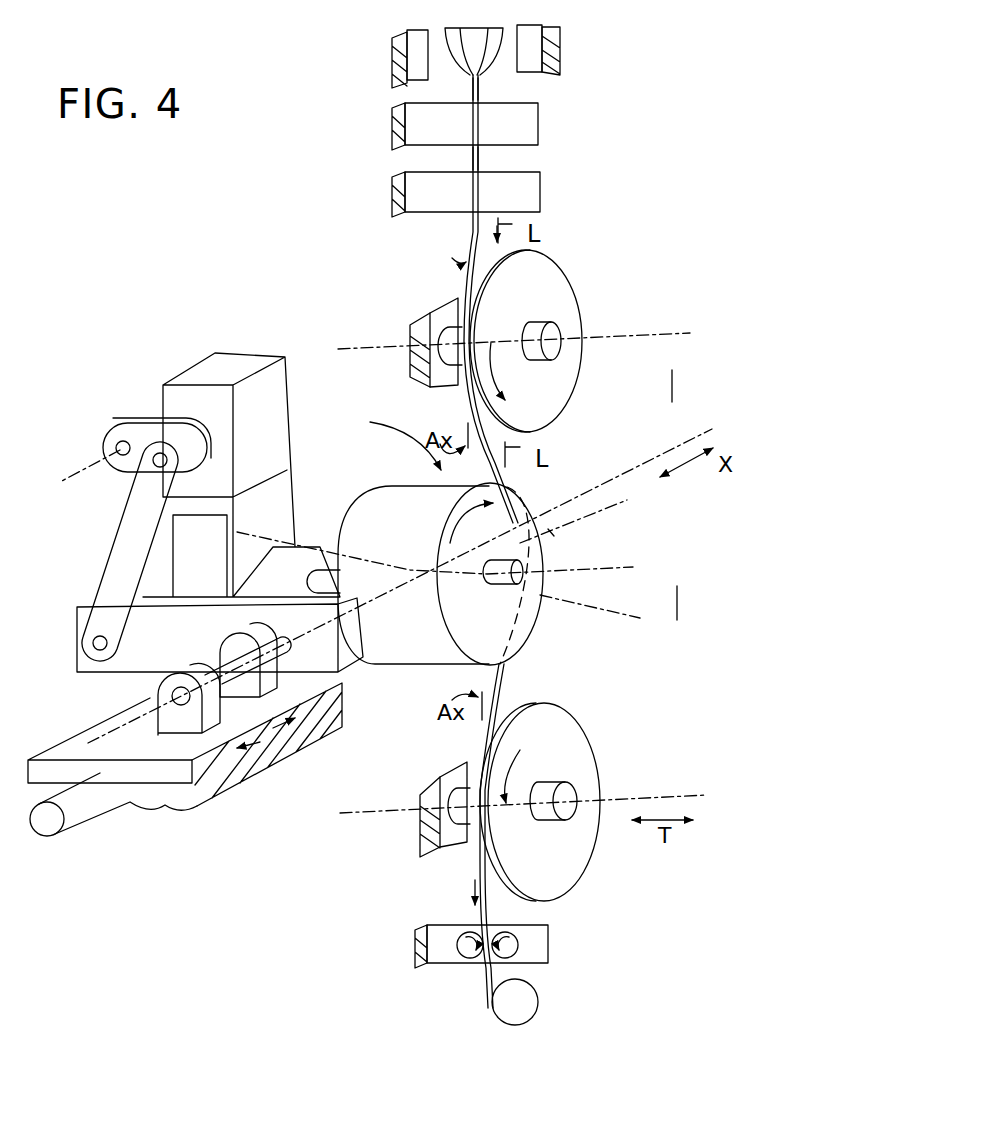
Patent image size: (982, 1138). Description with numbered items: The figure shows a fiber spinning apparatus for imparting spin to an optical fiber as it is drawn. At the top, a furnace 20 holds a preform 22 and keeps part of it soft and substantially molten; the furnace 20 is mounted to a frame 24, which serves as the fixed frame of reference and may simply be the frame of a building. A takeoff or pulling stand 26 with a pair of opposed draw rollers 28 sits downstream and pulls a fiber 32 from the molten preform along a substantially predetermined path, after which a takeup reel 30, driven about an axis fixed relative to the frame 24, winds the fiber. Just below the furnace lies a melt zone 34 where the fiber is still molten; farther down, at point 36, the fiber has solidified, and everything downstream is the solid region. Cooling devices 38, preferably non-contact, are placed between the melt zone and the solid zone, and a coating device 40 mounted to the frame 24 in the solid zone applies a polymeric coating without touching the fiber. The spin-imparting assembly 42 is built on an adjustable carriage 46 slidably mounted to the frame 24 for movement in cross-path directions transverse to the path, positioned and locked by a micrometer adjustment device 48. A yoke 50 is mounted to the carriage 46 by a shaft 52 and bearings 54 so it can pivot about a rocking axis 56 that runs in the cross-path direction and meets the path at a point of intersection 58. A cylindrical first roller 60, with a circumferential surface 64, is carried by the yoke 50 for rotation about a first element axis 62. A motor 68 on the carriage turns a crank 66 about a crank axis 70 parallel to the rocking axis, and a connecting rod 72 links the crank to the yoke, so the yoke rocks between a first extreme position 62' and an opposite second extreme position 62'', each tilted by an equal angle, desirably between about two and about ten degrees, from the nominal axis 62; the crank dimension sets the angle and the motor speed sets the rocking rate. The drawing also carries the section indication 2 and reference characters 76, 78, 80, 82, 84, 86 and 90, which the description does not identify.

The section line 2- 2 is at (677, 388).
The furnace 20 is at (382, 93).
The preform 22 is at (497, 28).
The frame 24 is at (392, 68).
The takeoff or pulling stand 26 is at (554, 938).
The draw rollers 28 is at (462, 960).
The takeup reel 30 is at (505, 1017).
The fiber 32 is at (468, 228).
The melt zone 34 is at (478, 100).
The solid zone point 36 is at (480, 158).
The cooling devices 38 is at (540, 123).
The coating device 40 is at (541, 186).
The spin-imparting assembly 42 is at (252, 326).
The adjustable carriage 46 is at (345, 692).
The micrometer adjustment device 48 is at (89, 824).
The yoke 50 is at (137, 665).
The shaft 52 is at (228, 645).
The bearings 54 is at (160, 722).
The rocking axis 56 is at (637, 465).
The point of intersection 58 is at (552, 532).
The first roller 60 is at (415, 662).
The first element axis 62 is at (452, 553).
The first extreme position 62' is at (597, 521).
The second extreme position 62'' is at (593, 629).
The circumferential surface 64 is at (396, 493).
The crank 66 is at (136, 425).
The motor 68 is at (192, 367).
The crank axis 70 is at (78, 478).
The connecting rod 72 is at (106, 577).
The first pulley 76 is at (573, 268).
The second pulley 78 is at (603, 882).
The first pulley axis 80 is at (657, 333).
The second pulley axis 82 is at (635, 798).
The first pulley rim 84 is at (515, 432).
The second pulley rim 86 is at (518, 718).
The fiber landing point 90 is at (389, 440).